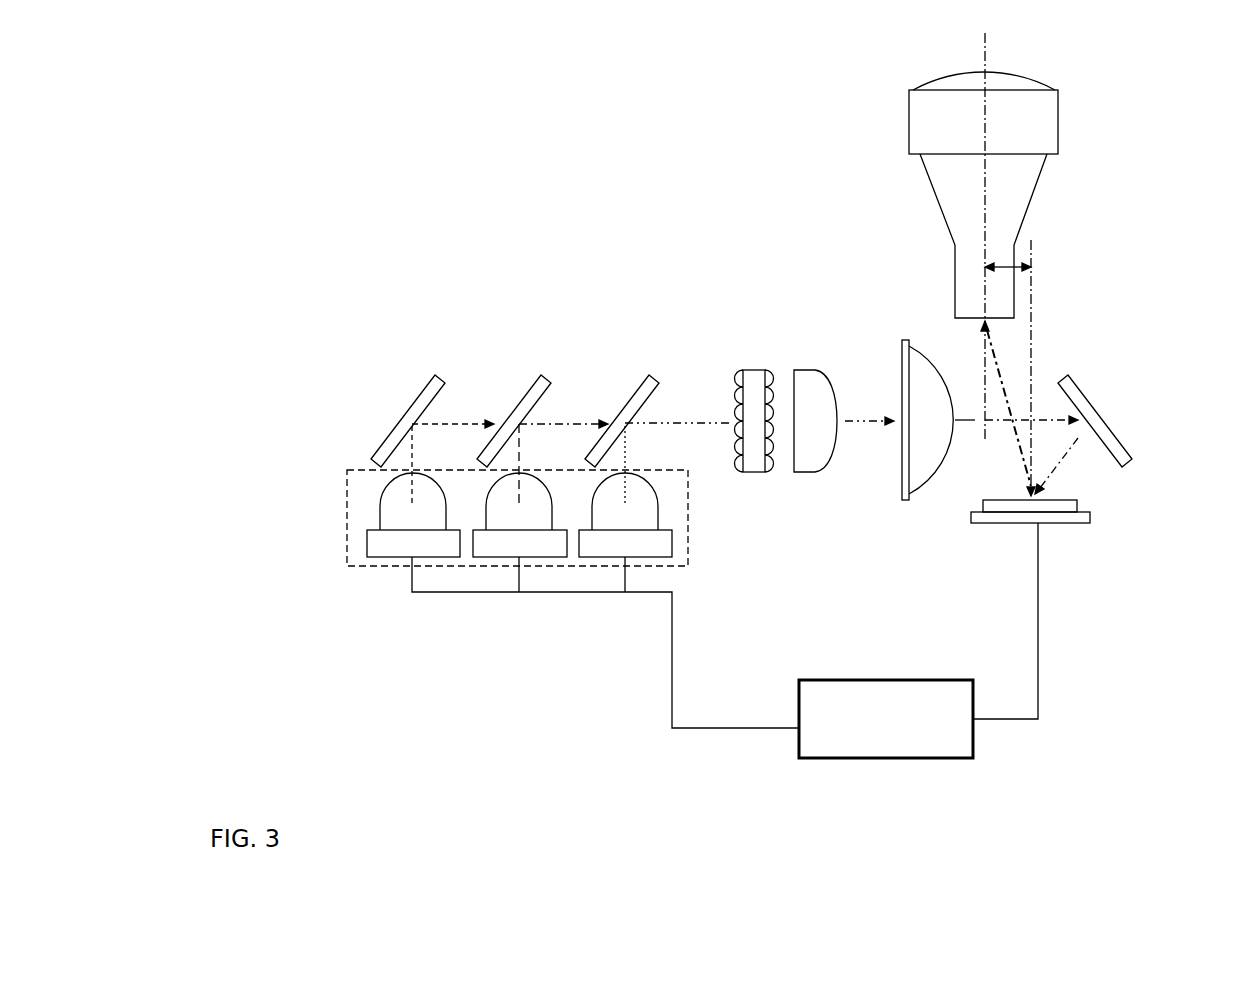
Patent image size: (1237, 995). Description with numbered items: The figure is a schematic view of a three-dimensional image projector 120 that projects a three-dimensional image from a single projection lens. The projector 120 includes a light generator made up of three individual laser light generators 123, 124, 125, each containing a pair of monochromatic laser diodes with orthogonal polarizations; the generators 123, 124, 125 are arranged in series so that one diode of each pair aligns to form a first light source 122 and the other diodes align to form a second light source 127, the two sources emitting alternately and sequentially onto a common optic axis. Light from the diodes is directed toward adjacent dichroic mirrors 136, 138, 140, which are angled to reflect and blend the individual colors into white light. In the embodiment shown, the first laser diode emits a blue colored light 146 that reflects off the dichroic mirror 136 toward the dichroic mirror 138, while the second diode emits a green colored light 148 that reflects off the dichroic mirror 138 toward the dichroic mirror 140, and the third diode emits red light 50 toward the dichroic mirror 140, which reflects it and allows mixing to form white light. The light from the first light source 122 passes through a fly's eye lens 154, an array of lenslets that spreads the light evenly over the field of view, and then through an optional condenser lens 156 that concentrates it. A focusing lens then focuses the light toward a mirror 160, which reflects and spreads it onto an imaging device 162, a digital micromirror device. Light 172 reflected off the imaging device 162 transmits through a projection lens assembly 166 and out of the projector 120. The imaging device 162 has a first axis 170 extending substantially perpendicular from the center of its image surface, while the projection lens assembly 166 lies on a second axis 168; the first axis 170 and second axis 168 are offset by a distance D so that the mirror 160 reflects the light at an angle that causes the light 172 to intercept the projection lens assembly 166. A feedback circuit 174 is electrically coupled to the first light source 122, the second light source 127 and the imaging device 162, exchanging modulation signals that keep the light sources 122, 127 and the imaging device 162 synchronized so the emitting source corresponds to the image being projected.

The projector 120 is at (430, 178).
The first light source 122 is at (473, 568).
The second light source 127 is at (352, 570).
The laser light generator 123 is at (367, 540).
The laser light generator 124 is at (500, 577).
The laser light generator 125 is at (614, 557).
The dichroic mirror 136 is at (417, 393).
The dichroic mirror 138 is at (535, 382).
The dichroic mirror 140 is at (634, 392).
The blue colored light 146 is at (412, 503).
The green colored light 148 is at (519, 503).
The third LED 50 is at (625, 503).
The fly's eye lens 154 is at (749, 370).
The condenser lens 156 is at (807, 368).
The mirror 160 is at (1080, 388).
The imaging device 162 is at (1060, 527).
The projection lens assembly 166 is at (1060, 115).
The second axis 168 is at (985, 190).
The first axis 170 is at (1031, 312).
The light 172 is at (1015, 432).
The feedback circuit 174 is at (897, 760).
The distance D is at (1003, 263).